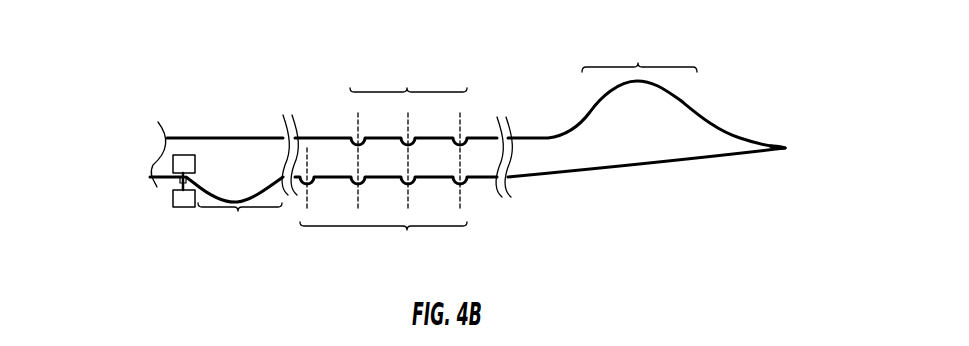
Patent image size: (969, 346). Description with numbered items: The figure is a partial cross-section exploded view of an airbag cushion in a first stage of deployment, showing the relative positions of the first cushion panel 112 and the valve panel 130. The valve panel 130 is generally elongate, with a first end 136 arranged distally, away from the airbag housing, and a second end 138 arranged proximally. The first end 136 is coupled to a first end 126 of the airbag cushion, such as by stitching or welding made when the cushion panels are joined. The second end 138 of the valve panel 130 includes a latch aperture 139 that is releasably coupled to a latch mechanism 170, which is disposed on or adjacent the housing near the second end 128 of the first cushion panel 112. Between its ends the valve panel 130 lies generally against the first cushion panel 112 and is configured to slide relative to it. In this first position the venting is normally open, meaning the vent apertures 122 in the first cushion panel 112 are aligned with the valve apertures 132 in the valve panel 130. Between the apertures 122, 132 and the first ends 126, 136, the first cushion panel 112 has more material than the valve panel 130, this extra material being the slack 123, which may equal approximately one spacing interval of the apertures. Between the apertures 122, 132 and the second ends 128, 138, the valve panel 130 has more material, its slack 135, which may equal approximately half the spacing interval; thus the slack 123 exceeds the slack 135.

The first cushion panel 112 is at (678, 97).
The vent apertures 122 is at (407, 88).
The slack in the first cushion panel 123 is at (638, 63).
The first end of the airbag cushion 126 is at (740, 137).
The second end of the first cushion panel 128 is at (178, 138).
The valve panel 130 is at (605, 170).
The valve apertures 132 is at (407, 231).
The slack in the valve panel 135 is at (238, 212).
The first end of the valve panel 136 is at (712, 155).
The second end of the valve panel 138 is at (166, 174).
The latch aperture 139 is at (173, 183).
The latch mechanism 170 is at (190, 209).